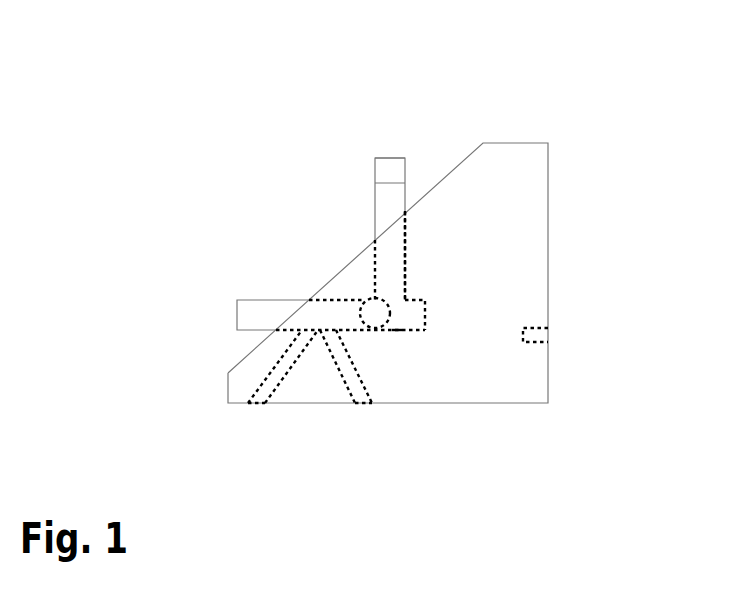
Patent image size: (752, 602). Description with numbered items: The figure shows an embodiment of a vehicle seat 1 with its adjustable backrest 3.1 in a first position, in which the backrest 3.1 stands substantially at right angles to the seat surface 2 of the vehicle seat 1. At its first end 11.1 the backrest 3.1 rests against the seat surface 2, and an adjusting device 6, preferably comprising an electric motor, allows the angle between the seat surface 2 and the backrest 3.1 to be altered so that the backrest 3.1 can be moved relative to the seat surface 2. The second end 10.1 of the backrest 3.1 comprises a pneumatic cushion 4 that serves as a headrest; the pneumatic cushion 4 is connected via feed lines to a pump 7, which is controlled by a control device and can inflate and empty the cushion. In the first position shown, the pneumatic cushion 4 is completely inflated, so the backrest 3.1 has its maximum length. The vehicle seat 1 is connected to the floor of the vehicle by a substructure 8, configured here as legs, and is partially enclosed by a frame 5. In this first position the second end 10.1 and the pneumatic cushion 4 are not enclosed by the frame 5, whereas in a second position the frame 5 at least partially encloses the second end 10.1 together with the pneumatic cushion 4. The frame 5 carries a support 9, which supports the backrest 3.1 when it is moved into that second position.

The vehicle seat 1 is at (173, 108).
The seat surface 2 is at (245, 320).
The backrest 3.1 is at (390, 211).
The pneumatic cushion 4 is at (390, 157).
The frame 5 is at (530, 275).
The adjusting device 6 is at (380, 320).
The pump 7 is at (415, 320).
The substructure 8 is at (266, 388).
The support 9 is at (547, 337).
The second end 10.1 is at (381, 156).
The first end 11.1 is at (398, 332).